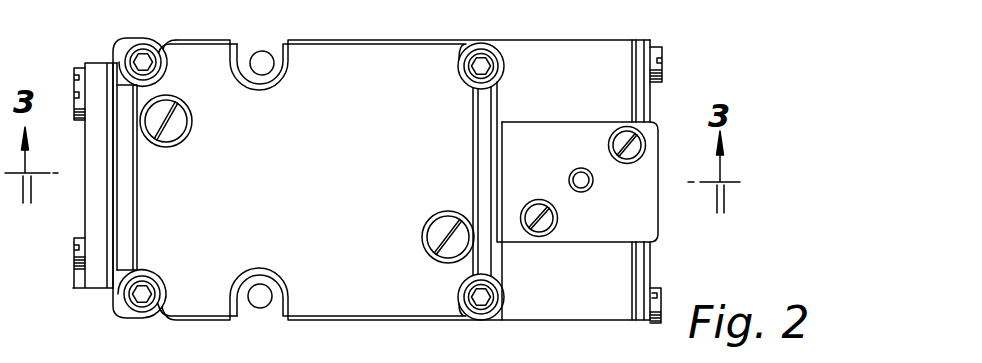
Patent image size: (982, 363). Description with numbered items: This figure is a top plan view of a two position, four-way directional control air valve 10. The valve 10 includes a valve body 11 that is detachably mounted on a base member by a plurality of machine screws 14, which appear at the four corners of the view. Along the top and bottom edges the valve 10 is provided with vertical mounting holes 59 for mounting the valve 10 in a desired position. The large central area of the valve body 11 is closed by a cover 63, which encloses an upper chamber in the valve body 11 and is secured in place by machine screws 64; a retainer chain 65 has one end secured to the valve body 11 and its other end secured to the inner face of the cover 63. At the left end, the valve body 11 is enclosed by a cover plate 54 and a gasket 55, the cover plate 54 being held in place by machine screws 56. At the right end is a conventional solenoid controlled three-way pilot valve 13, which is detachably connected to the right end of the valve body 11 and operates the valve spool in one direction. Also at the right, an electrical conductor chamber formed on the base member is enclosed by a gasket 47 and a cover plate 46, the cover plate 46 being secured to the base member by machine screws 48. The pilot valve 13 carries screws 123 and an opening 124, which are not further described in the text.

The directional control air valve 10 is at (104, 308).
The valve body 11 is at (120, 313).
The solenoid controlled three-way pilot valve 13 is at (650, 102).
The machine screws 14 is at (143, 55).
The cover plate 46 is at (645, 273).
The gasket 47 is at (633, 260).
The machine screws 48 is at (660, 53).
The cover plate 54 is at (95, 210).
The gasket 55 is at (110, 185).
The machine screws 56 is at (75, 85).
The vertical mounting holes 59 is at (263, 52).
The cover 63 is at (365, 70).
The machine screws 64 is at (435, 232).
The retainer chain 65 is at (175, 125).
The clamping screw 123 is at (622, 137).
The pin hole 124 is at (577, 173).